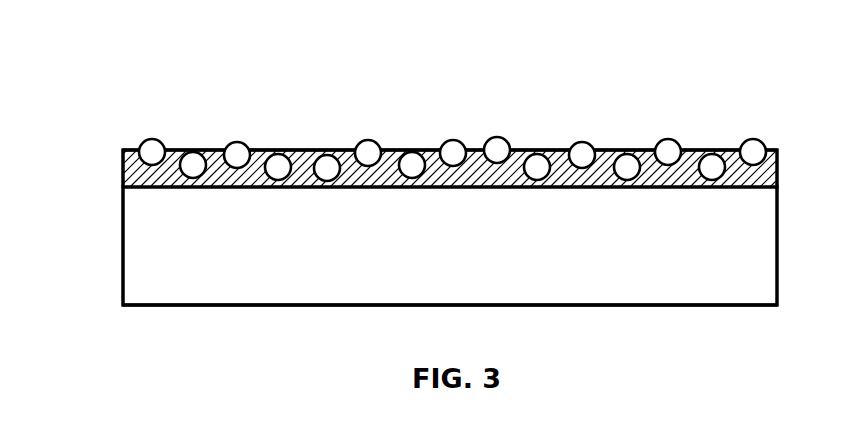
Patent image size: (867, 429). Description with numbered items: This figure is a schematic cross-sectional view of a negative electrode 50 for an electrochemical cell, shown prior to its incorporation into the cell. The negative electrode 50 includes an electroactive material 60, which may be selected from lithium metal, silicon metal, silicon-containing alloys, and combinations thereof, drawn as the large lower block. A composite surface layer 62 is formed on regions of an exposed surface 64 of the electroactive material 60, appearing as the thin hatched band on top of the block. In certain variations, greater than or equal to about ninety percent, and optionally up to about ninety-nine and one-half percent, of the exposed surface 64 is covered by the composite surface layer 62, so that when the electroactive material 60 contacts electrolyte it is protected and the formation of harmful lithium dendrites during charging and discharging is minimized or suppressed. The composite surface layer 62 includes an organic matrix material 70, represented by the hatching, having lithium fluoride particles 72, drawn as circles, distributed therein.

The negative electrode 50 is at (100, 50).
The electroactive material 60 is at (462, 258).
The composite surface layer 62 is at (120, 147).
The exposed surface 64 is at (560, 175).
The organic matrix material 70 is at (303, 152).
The lithium fluoride particles 72 is at (195, 151).